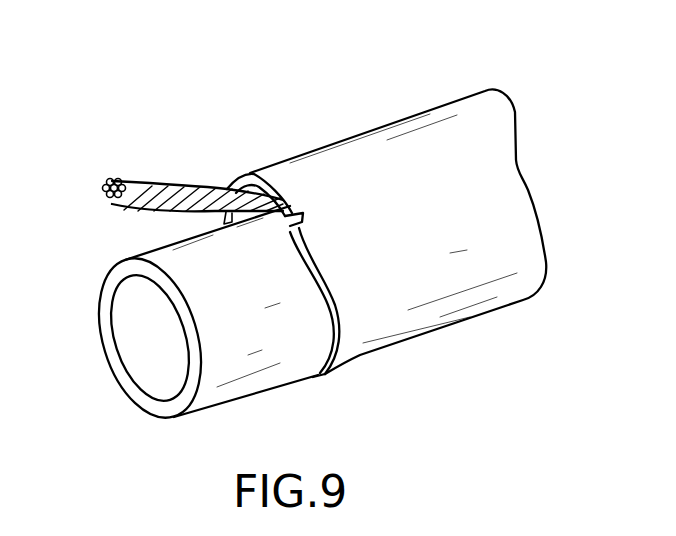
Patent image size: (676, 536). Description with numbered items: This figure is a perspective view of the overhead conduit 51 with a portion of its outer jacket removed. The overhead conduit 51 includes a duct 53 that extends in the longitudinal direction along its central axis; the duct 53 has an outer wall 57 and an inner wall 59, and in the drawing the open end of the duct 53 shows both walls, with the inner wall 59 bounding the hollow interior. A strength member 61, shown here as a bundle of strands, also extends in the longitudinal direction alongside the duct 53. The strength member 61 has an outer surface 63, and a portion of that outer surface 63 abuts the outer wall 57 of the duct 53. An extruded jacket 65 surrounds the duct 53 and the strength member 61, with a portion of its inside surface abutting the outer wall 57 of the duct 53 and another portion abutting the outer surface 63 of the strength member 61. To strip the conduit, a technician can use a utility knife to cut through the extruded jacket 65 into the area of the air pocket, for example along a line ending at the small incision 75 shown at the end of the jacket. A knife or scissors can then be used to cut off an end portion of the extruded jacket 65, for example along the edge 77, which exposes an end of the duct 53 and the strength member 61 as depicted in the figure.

The overhead conduit 51 is at (389, 103).
The duct 53 is at (110, 298).
The outer wall 57 is at (107, 337).
The inner wall 59 is at (122, 357).
The strength member 61 is at (99, 170).
The outer surface 63 is at (200, 184).
The extruded jacket 65 is at (498, 178).
The small incision 75 is at (307, 213).
The edge 77 is at (314, 377).